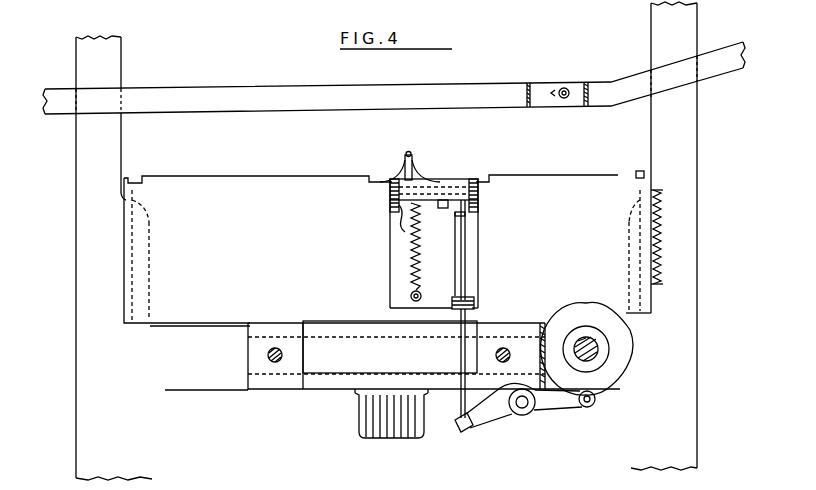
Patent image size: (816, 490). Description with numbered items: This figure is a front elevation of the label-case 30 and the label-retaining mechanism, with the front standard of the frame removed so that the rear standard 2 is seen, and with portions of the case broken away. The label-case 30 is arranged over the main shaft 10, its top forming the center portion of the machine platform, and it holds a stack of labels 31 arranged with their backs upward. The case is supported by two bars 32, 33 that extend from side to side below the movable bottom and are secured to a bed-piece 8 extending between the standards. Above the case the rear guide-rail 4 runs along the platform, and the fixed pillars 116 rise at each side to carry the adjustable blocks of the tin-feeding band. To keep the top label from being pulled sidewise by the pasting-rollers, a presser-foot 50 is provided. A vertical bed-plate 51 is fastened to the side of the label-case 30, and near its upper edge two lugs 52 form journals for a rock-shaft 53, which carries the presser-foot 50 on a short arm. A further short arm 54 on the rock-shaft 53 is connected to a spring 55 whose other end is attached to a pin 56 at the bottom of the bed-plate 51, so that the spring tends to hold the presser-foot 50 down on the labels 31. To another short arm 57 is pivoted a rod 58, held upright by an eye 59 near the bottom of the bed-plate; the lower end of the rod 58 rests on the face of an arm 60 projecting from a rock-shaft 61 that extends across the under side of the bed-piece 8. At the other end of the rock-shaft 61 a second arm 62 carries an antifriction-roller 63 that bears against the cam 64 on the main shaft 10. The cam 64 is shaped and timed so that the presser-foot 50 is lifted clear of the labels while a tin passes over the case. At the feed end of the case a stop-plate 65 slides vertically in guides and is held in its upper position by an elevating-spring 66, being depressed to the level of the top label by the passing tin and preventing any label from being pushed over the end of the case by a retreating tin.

The fixed pillar 116 is at (386, 241).
The rear standard 2 is at (408, 388).
The rear guide-rail 4 is at (394, 78).
The label-case 30 is at (387, 250).
The stop-plate 65 is at (637, 172).
The elevating-spring 66 is at (660, 250).
The bar 33 is at (514, 322).
The bar 32 is at (268, 324).
The bed-piece 8 is at (339, 381).
The label 31 is at (463, 178).
The presser-foot 50 is at (410, 156).
The lug 52 is at (390, 197).
The short arm 54 is at (399, 209).
The rock-shaft 53 is at (446, 203).
The spring 55 is at (411, 265).
The pin 56 is at (410, 297).
The short arm 57 is at (448, 250).
The bed-plate 51 is at (448, 253).
The eye 59 is at (474, 300).
The rod 58 is at (461, 335).
The arm 60 is at (470, 426).
The rock-shaft 61 is at (522, 410).
The second arm 62 is at (568, 400).
The antifriction-roller 63 is at (591, 408).
The cam 64 is at (614, 336).
The main shaft 10 is at (590, 352).